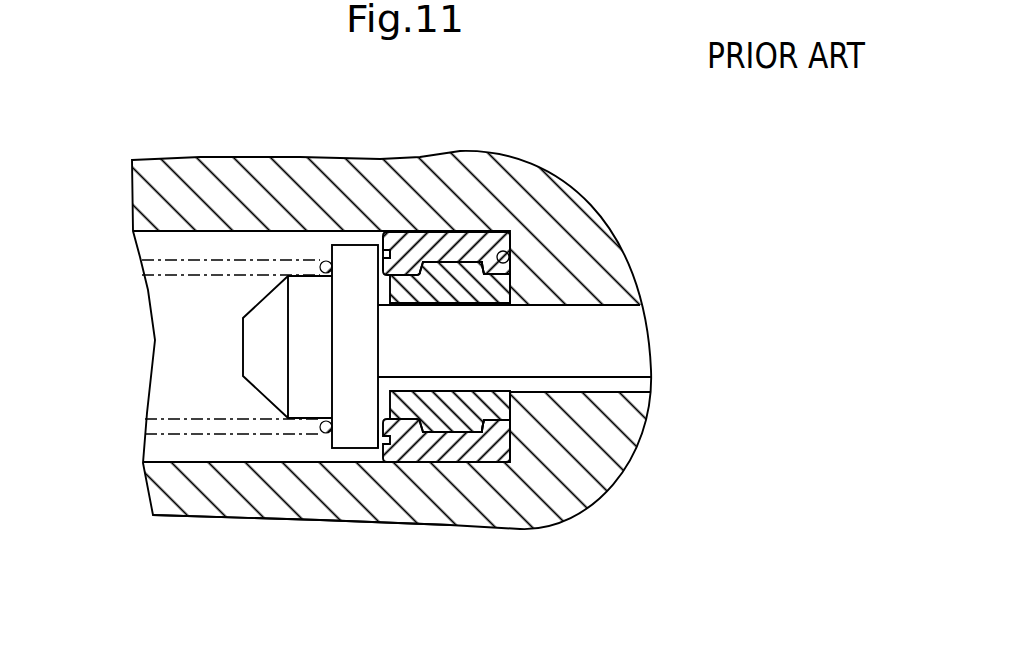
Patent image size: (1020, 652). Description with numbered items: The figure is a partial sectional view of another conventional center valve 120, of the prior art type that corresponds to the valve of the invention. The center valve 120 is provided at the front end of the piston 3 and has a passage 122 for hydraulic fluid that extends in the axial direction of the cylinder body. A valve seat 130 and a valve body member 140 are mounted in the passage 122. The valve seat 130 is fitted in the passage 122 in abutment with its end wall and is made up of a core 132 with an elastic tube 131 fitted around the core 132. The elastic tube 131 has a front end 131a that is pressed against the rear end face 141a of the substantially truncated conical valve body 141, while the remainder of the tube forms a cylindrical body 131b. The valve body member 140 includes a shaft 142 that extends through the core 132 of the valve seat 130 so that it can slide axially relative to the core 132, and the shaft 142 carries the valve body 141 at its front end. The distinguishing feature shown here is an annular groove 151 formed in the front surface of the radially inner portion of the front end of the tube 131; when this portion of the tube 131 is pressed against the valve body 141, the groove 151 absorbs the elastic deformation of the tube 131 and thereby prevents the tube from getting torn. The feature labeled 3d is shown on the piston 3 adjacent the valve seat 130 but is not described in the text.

The piston 3 is at (202, 205).
The housing groove 3d is at (512, 267).
The center valve 120 is at (267, 238).
The passage 122 is at (222, 461).
The valve seat 130 is at (444, 219).
The elastic tube 131 is at (406, 447).
The front end 131a is at (394, 267).
The cylindrical body 131b is at (485, 265).
The core 132 is at (493, 410).
The valve body member 140 is at (230, 353).
The valve body 141 is at (348, 423).
The rear end face 141a is at (382, 442).
The shaft 142 is at (602, 343).
The annular groove 151 is at (383, 257).